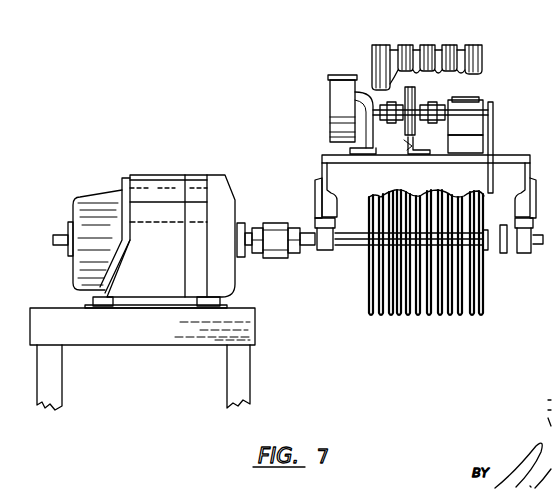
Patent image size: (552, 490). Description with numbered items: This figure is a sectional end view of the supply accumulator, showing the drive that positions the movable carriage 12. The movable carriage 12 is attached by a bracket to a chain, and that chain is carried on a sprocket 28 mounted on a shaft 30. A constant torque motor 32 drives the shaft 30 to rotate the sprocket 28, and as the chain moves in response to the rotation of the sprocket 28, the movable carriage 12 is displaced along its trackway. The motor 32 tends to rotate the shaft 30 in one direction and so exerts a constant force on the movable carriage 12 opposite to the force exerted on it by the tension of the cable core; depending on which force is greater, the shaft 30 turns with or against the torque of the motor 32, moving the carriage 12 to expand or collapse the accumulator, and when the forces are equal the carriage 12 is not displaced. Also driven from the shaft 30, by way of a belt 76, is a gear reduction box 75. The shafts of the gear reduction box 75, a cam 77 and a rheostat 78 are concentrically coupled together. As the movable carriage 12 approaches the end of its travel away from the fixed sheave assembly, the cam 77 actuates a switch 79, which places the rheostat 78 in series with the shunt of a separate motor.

The movable carriage 12 is at (485, 36).
The sprocket 28 is at (503, 254).
The shaft 30 is at (362, 248).
The constant torque motor 32 is at (145, 177).
The gear reduction box 75 is at (475, 100).
The belt 76 is at (490, 193).
The cam 77 is at (415, 98).
The rheostat 78 is at (330, 86).
The switch 79 is at (407, 142).